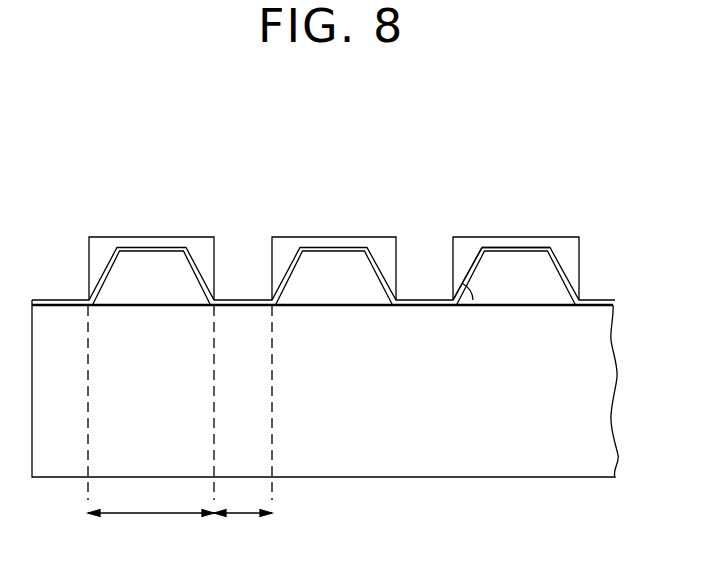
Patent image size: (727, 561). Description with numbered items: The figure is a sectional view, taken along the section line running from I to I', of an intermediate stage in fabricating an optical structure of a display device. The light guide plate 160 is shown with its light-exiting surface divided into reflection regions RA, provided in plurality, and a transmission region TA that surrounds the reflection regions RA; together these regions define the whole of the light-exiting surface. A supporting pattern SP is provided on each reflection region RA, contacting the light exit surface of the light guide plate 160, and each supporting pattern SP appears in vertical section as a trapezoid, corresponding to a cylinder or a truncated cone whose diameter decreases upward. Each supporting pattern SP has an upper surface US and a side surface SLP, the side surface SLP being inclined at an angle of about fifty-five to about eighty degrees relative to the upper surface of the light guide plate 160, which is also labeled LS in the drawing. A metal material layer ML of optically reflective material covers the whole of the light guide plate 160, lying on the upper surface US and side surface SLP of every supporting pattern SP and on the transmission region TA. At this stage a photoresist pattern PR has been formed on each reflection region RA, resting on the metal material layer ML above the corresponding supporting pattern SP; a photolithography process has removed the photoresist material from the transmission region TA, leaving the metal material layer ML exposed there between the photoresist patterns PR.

The light guide plate 160 is at (605, 385).
The lower surface LS is at (522, 307).
The metal material layer ML is at (553, 261).
The supporting pattern SP is at (560, 287).
The side surface SLP is at (475, 262).
The upper surface US is at (515, 249).
The photoresist pattern PR is at (563, 243).
The reflection region RA is at (151, 425).
The transmission region TA is at (243, 425).
The section line start I is at (29, 495).
The section line end I' is at (615, 495).